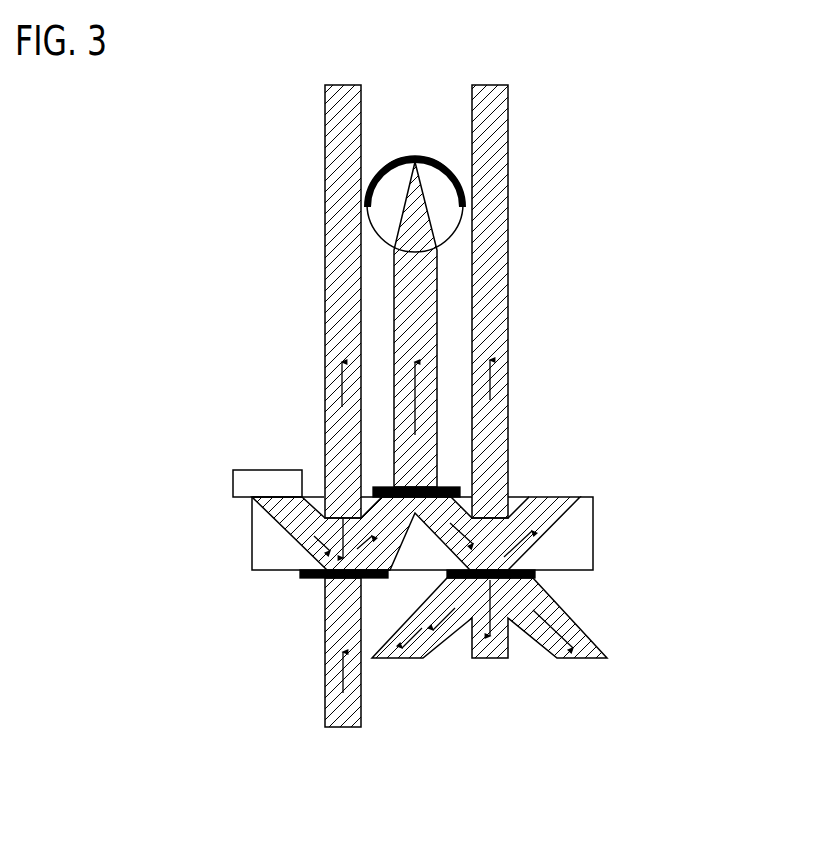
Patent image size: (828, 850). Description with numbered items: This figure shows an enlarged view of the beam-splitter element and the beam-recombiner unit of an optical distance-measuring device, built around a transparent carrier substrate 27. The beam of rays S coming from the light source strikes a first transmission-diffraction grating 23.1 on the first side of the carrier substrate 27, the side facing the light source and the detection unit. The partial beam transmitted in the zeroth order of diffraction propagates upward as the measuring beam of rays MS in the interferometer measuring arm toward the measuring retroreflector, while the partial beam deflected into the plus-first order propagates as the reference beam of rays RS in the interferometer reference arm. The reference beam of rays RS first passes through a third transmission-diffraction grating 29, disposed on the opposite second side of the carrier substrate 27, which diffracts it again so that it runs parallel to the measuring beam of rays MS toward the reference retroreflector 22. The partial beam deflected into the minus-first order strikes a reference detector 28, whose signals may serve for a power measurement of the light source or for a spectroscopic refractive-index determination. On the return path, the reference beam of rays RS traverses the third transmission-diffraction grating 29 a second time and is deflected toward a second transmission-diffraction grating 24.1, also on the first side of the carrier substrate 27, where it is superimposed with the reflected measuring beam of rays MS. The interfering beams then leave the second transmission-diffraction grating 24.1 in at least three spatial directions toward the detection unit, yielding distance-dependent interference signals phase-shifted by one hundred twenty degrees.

The reference retroreflector 22 is at (427, 157).
The measuring beam of rays MS is at (345, 163).
The reference beam of rays RS is at (422, 300).
The third transmission-diffraction grating 29 is at (375, 484).
The reference detector 28 is at (243, 482).
The carrier substrate 27 is at (593, 537).
The first transmission-diffraction grating 23.1 is at (300, 578).
The second transmission-diffraction grating 24.1 is at (537, 577).
The beam of rays S is at (345, 706).